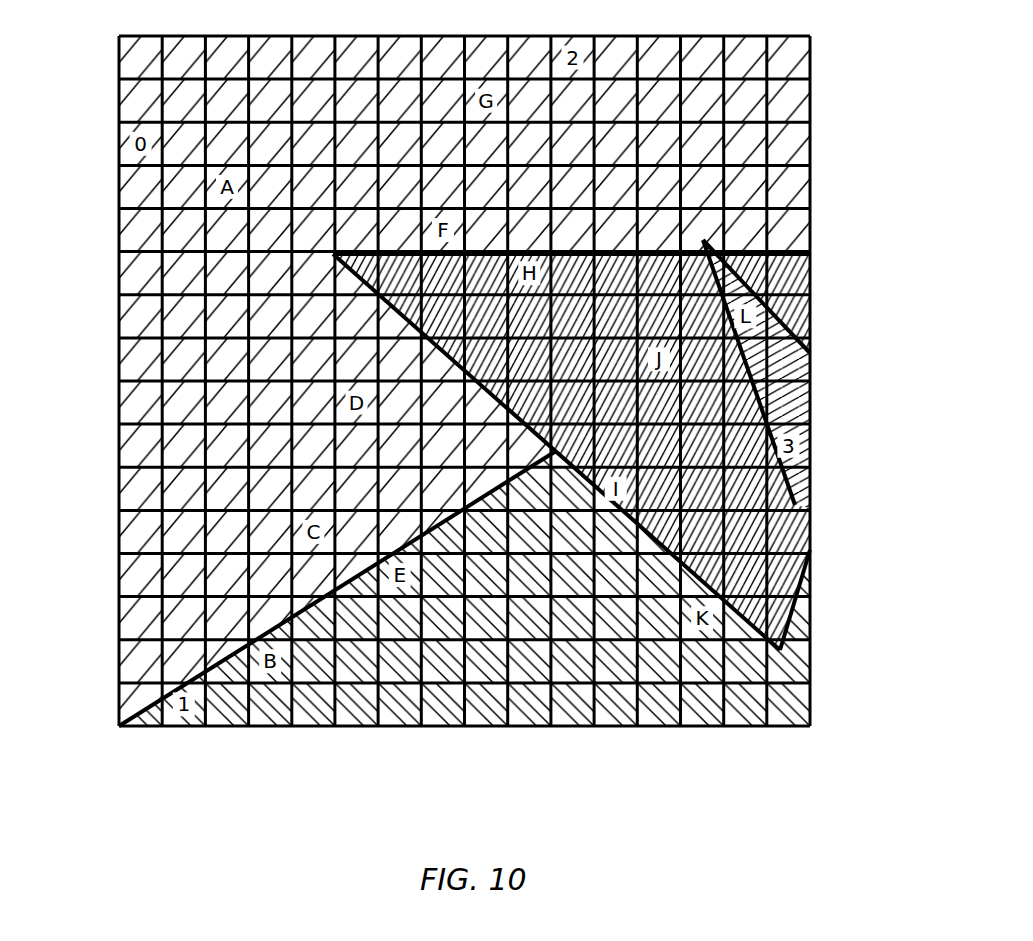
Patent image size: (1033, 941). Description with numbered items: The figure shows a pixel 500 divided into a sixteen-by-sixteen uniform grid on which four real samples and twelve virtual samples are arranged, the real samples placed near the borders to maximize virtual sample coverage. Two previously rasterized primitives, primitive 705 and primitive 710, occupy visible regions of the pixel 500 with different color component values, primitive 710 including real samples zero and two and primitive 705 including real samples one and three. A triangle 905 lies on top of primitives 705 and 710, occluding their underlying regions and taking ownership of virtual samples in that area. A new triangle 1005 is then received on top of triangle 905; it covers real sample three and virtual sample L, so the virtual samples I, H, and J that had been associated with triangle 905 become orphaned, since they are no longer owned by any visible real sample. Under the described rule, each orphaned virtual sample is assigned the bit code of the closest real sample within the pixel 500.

The pixel 500 is at (464, 413).
The primitive 705 is at (464, 621).
The primitive 710 is at (420, 381).
The triangle 905 is at (740, 615).
The new triangle 1005 is at (797, 384).